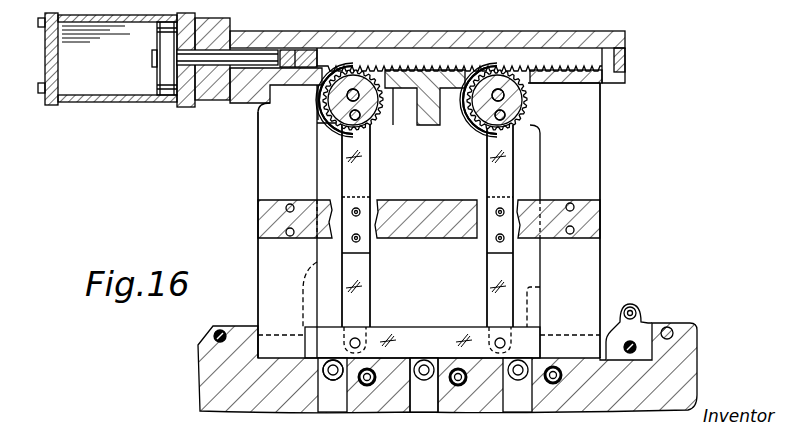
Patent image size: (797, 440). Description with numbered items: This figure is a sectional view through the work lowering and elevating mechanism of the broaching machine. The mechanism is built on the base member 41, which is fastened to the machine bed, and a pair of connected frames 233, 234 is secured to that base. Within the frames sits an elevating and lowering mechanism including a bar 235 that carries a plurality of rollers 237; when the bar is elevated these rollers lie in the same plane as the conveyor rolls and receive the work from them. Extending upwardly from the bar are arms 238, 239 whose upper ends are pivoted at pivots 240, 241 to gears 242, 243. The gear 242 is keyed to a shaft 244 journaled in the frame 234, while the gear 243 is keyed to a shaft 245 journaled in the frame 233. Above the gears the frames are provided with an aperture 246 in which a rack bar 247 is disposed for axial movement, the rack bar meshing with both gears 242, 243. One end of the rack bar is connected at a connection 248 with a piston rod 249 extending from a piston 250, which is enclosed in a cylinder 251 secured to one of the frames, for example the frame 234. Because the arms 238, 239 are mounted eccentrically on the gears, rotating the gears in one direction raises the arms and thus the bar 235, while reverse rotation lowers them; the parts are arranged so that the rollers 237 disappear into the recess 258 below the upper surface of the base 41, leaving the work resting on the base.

The base member 41 is at (693, 338).
The frame 233 is at (596, 186).
The frame 234 is at (262, 173).
The bar 235 is at (413, 337).
The rollers 237 is at (333, 380).
The arm 238 is at (363, 184).
The arm 239 is at (492, 180).
The pivot 240 is at (363, 138).
The pivot 241 is at (481, 130).
The gear 242 is at (320, 117).
The gear 243 is at (470, 126).
The shaft 244 is at (324, 104).
The shaft 245 is at (536, 104).
The aperture 246 is at (612, 50).
The rack bar 247 is at (456, 52).
The connection 248 is at (322, 36).
The piston rod 249 is at (264, 40).
The piston 250 is at (158, 80).
The cylinder 251 is at (99, 103).
The recess 258 is at (438, 405).